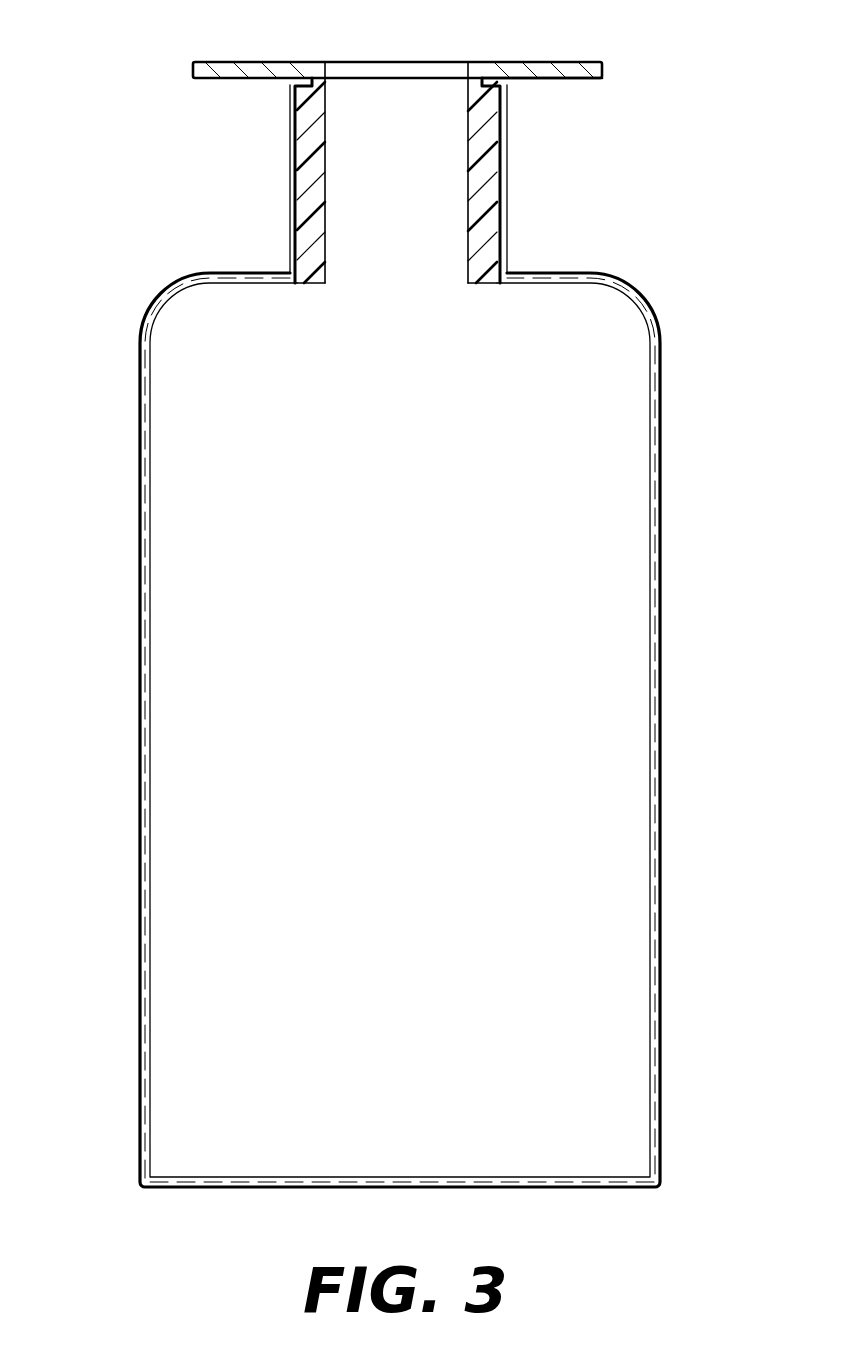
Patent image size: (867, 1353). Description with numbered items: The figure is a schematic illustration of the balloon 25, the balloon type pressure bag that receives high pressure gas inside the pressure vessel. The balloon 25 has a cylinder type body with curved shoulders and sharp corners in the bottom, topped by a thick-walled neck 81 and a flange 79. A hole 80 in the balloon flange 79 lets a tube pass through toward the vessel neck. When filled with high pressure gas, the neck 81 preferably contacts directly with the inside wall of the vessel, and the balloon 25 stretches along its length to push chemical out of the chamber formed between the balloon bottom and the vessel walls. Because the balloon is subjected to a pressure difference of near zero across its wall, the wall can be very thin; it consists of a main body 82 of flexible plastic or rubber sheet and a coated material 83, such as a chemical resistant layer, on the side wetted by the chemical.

The balloon 25 is at (390, 730).
The flange 79 is at (602, 70).
The hole 80 is at (444, 46).
The neck 81 is at (300, 141).
The main body 82 is at (142, 452).
The coated material 83 is at (142, 565).